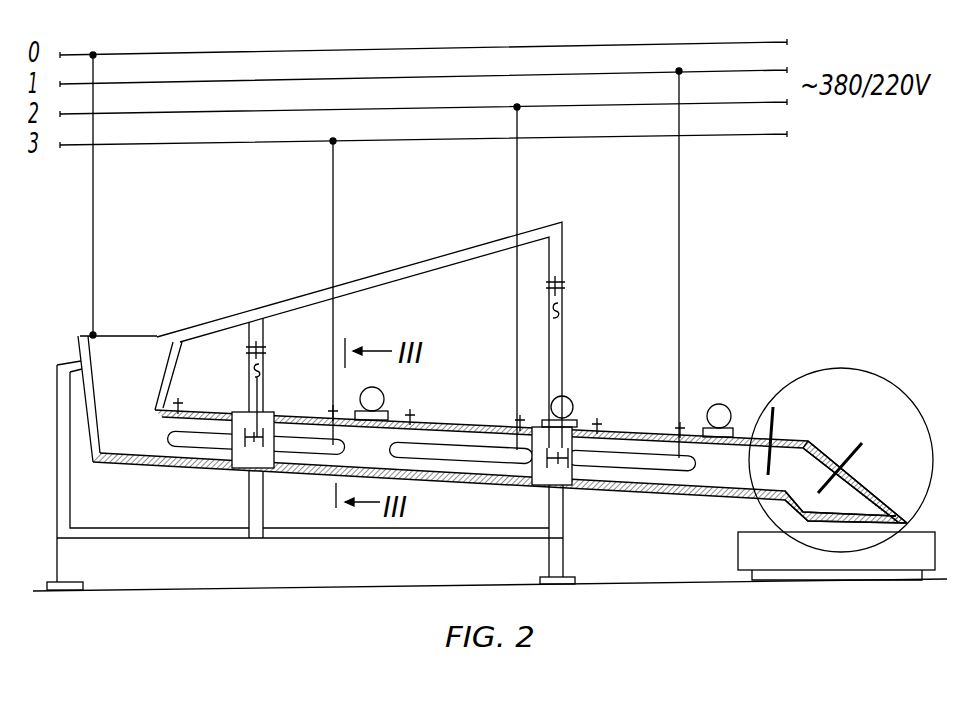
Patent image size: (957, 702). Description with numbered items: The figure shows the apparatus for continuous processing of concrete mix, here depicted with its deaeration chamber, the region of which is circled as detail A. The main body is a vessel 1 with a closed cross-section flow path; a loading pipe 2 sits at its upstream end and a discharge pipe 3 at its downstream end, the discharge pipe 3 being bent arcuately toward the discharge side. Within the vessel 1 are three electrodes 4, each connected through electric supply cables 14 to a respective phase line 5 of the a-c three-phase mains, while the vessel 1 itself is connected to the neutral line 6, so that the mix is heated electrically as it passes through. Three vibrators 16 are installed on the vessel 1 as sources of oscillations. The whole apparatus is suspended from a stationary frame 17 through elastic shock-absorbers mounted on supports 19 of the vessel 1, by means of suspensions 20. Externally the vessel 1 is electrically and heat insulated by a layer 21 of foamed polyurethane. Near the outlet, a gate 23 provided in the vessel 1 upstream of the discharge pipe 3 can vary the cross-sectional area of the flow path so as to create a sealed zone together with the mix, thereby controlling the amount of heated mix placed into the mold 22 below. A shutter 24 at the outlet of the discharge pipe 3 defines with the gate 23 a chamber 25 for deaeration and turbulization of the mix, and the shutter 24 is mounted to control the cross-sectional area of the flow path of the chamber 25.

The vessel 1 is at (399, 412).
The loading pipe 2 is at (80, 346).
The discharge pipe 3 is at (863, 484).
The electrodes 4 is at (212, 440).
The phase line 5 is at (302, 141).
The neutral line 6 is at (414, 48).
The electric supply cables 14 is at (680, 166).
The vibrators 16 is at (572, 398).
The stationary frame 17 is at (302, 298).
The supports 19 is at (276, 420).
The suspensions 20 is at (563, 338).
The layer of foamed polyurethane 21 is at (86, 430).
The mold 22 is at (746, 545).
The gate 23 is at (777, 408).
The shutter 24 is at (863, 443).
The chamber 25 is at (797, 441).
The detail A is at (867, 366).